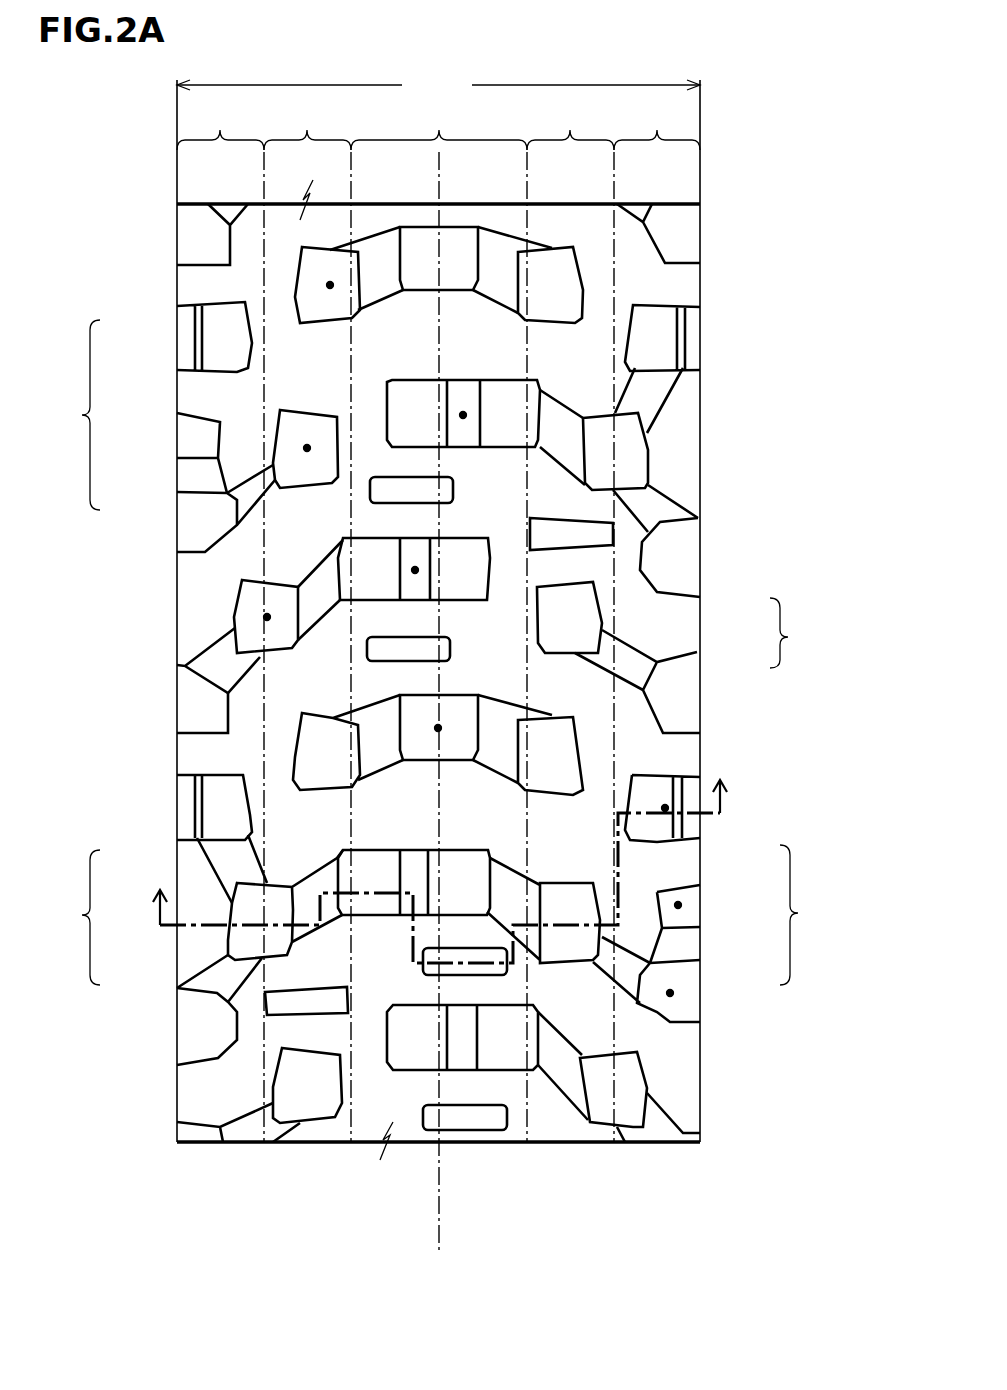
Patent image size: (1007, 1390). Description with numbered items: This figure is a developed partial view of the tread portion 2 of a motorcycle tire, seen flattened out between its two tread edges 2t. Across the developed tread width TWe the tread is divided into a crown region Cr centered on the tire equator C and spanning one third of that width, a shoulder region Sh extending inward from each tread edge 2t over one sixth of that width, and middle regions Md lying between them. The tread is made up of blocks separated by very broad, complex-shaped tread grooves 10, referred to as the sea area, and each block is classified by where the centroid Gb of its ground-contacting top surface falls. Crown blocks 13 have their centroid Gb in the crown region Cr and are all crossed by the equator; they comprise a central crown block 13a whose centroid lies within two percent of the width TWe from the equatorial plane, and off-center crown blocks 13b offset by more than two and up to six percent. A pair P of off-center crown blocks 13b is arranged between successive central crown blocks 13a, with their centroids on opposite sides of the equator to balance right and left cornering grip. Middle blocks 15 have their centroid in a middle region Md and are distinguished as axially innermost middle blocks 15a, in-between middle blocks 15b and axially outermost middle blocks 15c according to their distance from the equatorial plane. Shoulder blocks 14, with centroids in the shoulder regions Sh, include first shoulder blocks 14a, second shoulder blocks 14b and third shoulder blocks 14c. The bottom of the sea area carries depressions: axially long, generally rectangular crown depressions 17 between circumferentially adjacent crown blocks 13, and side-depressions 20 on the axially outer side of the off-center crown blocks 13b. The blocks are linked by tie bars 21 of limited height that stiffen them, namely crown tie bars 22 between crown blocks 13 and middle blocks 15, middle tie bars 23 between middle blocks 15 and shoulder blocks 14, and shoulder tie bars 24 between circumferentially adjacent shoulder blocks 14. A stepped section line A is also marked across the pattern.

The tread portion 2 is at (724, 264).
The tread edges 2t is at (176, 213).
The tread grooves (sea area) 10 is at (200, 588).
The crown blocks 13 is at (467, 737).
The central crown block 13a is at (425, 262).
The off-center crown block 13b is at (590, 533).
The shoulder blocks 14 is at (436, 857).
The first shoulder blocks 14a is at (182, 807).
The second shoulder blocks 14b is at (190, 726).
The third shoulder blocks 14c is at (686, 917).
The middle blocks 15 is at (77, 415).
The axially innermost middle blocks 15a is at (553, 282).
The in-between middle blocks 15b is at (297, 428).
The axially outermost middle blocks 15c is at (253, 592).
The crown depressions 17 is at (464, 1113).
The side-depressions 20 is at (655, 563).
The tie bars 21 is at (663, 821).
The crown tie bars 22 is at (565, 445).
The middle tie bars 23 is at (647, 390).
The shoulder tie bars 24 is at (657, 1012).
The centroid Gb is at (330, 285).
The pair of off-center crown blocks P is at (431, 791).
The section line A- A is at (442, 796).
The tire equator C is at (439, 713).
The developed tread width TWe is at (438, 86).
The shoulder regions Sh is at (438, 127).
The middle regions Md is at (439, 127).
The crown region Cr is at (439, 127).